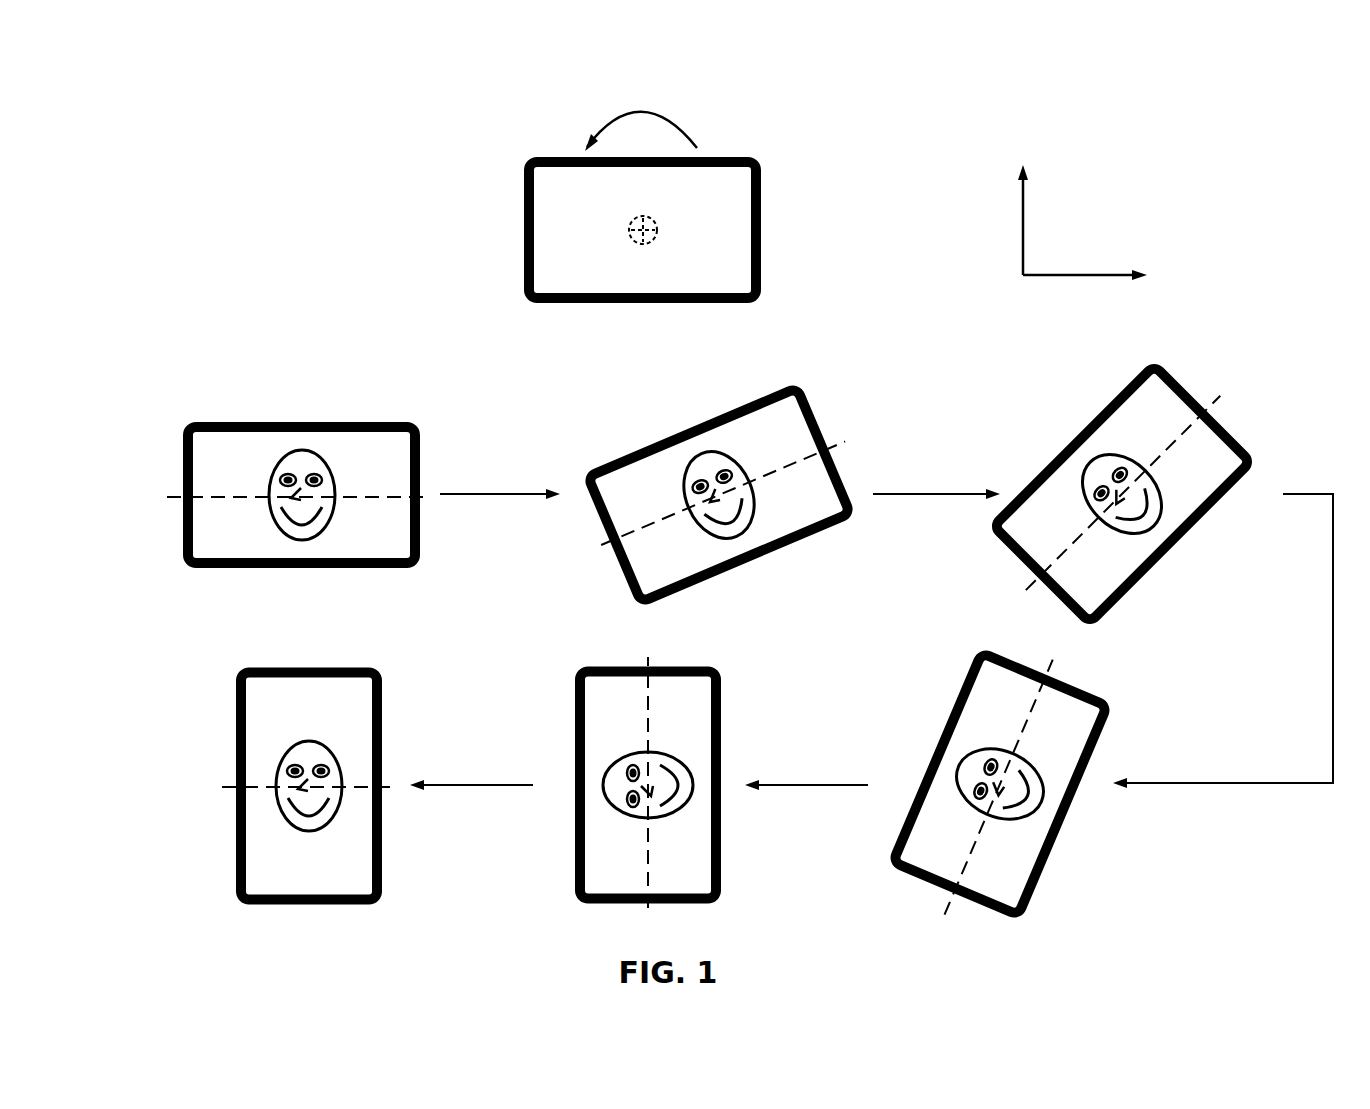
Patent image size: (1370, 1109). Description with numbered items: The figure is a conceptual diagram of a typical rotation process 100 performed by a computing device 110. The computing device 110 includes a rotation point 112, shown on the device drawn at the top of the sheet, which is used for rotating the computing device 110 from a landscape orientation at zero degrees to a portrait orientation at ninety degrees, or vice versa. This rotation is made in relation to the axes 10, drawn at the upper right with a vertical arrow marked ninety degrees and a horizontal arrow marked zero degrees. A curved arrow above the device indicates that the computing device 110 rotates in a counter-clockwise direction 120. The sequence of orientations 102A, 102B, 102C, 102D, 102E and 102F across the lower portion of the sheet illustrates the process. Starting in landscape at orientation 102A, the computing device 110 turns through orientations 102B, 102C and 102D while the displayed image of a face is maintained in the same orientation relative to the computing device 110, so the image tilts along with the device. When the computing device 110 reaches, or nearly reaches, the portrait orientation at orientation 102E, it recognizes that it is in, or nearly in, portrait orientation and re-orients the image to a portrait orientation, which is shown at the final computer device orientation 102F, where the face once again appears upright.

The rotation process 100 is at (238, 100).
The computing device 110 is at (760, 208).
The rotation point 112 is at (628, 225).
The counter-clockwise direction 120 is at (657, 112).
The axes 10 is at (1023, 272).
The orientation 102A is at (487, 392).
The orientation 102B is at (723, 493).
The orientation 102C is at (1123, 493).
The orientation 102D is at (998, 787).
The orientation 102E is at (648, 802).
The computer device orientation 102F is at (261, 811).